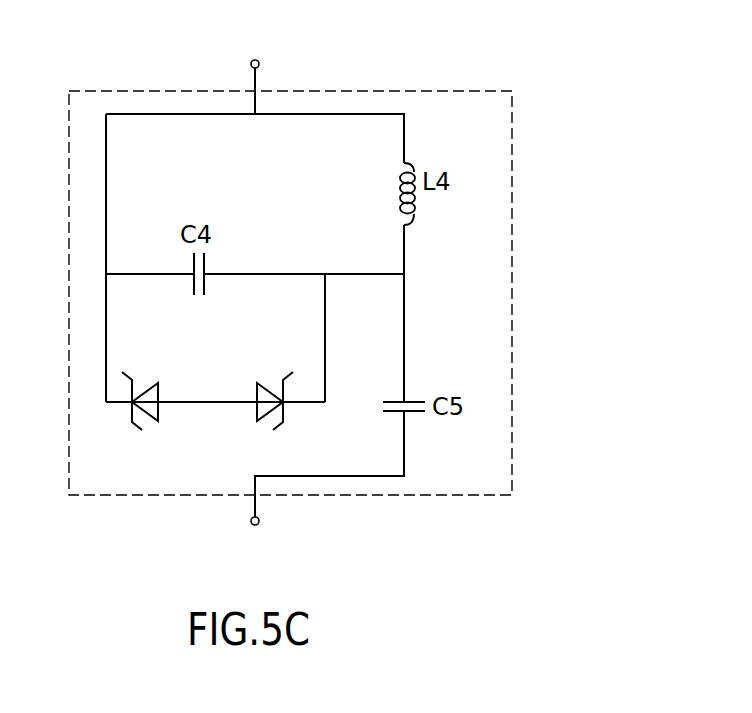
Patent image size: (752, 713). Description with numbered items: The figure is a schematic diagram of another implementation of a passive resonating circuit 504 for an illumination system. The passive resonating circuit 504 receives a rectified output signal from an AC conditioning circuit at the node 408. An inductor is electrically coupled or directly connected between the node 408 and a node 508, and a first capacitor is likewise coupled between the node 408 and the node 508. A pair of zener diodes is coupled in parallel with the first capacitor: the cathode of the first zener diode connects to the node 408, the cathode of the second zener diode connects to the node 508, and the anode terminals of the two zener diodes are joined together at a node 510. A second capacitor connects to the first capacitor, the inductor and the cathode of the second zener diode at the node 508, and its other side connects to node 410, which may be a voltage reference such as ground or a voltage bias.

The node 408 is at (259, 63).
The passive resonating circuit 504 is at (376, 91).
The node 508 is at (368, 273).
The node 510 is at (203, 402).
The node 410 is at (259, 521).